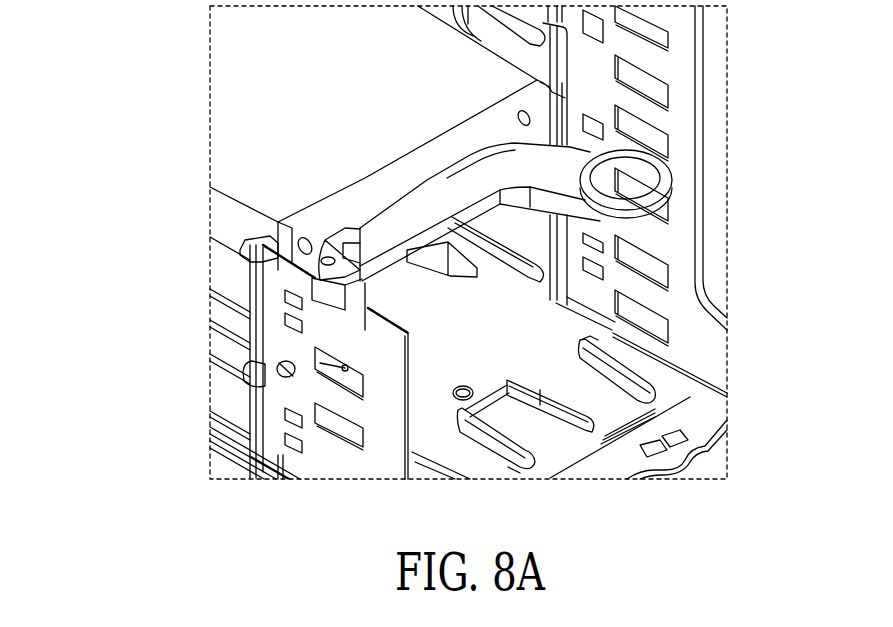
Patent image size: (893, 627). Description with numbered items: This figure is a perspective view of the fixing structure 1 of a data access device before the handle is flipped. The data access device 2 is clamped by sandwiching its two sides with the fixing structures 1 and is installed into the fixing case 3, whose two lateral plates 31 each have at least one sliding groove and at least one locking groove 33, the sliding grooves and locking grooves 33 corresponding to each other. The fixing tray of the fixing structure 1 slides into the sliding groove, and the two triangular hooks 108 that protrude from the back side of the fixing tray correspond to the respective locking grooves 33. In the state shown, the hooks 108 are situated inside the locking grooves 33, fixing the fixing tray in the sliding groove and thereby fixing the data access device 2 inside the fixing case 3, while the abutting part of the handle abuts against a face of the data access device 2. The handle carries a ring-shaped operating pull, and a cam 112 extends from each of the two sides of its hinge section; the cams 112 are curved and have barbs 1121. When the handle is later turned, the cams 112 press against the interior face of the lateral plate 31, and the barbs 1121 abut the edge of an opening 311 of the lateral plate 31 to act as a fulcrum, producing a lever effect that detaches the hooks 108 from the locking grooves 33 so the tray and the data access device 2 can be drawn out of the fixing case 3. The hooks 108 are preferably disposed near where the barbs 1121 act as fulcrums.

The fixing structure 1 is at (677, 190).
The data access device 2 is at (237, 100).
The fixing case 3 is at (705, 97).
The lateral plate 31 is at (230, 275).
The locking groove 33 is at (285, 320).
The hook 108 is at (257, 362).
The cam 112 is at (357, 312).
The opening 311 is at (330, 292).
The barb 1121 is at (330, 288).